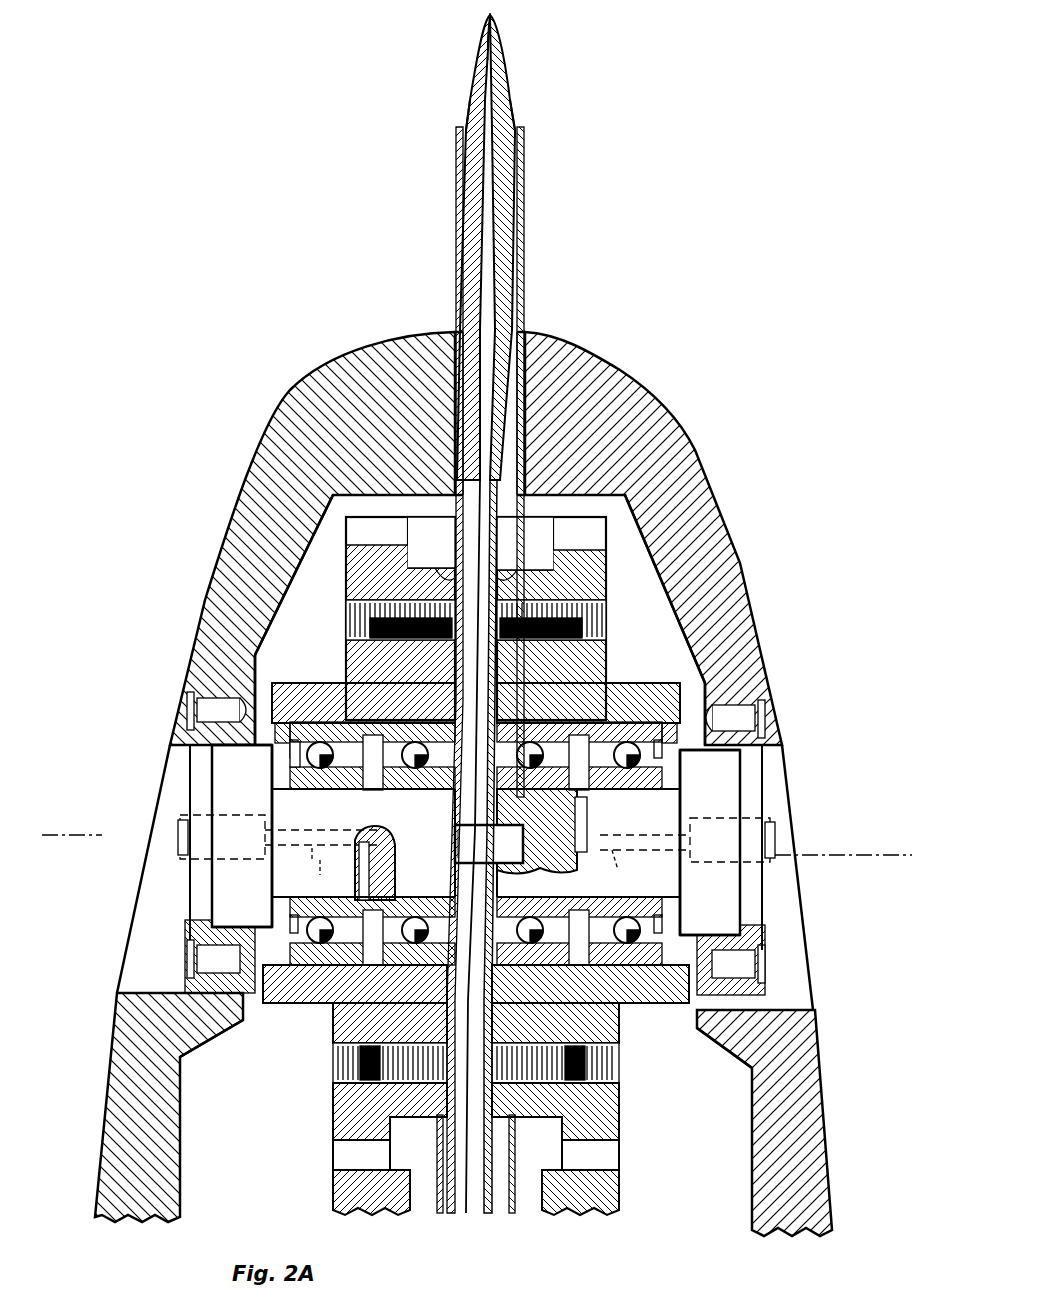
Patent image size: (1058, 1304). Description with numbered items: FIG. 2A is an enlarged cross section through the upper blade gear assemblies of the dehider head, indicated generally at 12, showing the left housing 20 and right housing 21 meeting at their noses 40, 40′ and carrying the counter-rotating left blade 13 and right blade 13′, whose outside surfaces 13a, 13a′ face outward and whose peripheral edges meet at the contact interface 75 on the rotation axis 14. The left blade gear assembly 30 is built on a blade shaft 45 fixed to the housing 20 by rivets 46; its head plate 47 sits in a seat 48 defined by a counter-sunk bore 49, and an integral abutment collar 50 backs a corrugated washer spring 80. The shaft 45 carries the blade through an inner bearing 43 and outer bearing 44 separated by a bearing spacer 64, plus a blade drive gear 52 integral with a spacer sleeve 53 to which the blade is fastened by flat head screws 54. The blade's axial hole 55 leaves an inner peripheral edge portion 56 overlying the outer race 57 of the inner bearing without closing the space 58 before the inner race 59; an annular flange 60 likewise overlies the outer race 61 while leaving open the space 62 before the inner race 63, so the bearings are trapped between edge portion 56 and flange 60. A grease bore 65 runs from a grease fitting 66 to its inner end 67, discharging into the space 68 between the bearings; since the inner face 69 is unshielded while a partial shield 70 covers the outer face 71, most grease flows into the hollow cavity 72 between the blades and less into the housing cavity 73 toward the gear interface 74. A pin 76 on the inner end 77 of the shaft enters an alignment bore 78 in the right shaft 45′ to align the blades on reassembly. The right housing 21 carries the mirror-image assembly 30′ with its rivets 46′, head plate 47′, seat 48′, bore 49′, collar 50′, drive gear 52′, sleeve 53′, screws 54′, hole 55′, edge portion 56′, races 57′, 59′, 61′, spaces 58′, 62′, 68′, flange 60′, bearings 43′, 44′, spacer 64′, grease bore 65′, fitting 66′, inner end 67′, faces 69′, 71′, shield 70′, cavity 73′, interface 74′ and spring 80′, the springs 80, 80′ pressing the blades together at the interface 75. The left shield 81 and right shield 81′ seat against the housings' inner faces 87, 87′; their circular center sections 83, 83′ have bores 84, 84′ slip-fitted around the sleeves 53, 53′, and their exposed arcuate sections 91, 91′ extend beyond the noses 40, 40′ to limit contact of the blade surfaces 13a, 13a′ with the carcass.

The surgical instrument 12 is at (812, 214).
The left blade 13 is at (483, 78).
The right blade 13′ is at (525, 80).
The blade outside surface 13a is at (468, 100).
The blade outside surface 13a′ is at (512, 104).
The blade rotation axis 14 is at (50, 822).
The left housing 20 is at (282, 385).
The right housing 21 is at (683, 392).
The blade gear assembly 30 is at (322, 567).
The blade gear assembly 30′ is at (640, 632).
The nose 40 is at (403, 362).
The nose 40′ is at (585, 372).
The inner bearing 43 is at (432, 718).
The rotor end member 43′ is at (528, 718).
The outer bearing 44 is at (322, 718).
The outer bearing 44′ is at (632, 718).
The blade shaft 45 is at (290, 866).
The blade shaft 45′ is at (660, 830).
The rivets 46 is at (215, 711).
The fastening screw 46′ is at (760, 962).
The head plate 47 is at (196, 790).
The housing wall 47′ is at (766, 900).
The seat 48 is at (185, 656).
The housing shoulder 48′ is at (700, 1035).
The bore 49 is at (125, 935).
The lower housing portion 49′ is at (818, 965).
The abutment collar 50 is at (225, 760).
The support collar 50′ is at (745, 760).
The blade drive gear 52 is at (345, 1115).
The lower rotor member 52′ is at (590, 1110).
The spacer sleeve 53 is at (298, 1008).
The spacer sleeve 53′ is at (660, 1018).
The flat head screws 54 is at (380, 1060).
The commutator brushes 54′ is at (580, 1068).
The axial hole 55 is at (452, 800).
The rotor sleeve 55′ is at (468, 870).
The inner peripheral edge portion 56 is at (415, 987).
The bearing block 56′ is at (534, 987).
The outer race 57 is at (408, 718).
The rotor core 57′ is at (566, 718).
The space 58 is at (393, 715).
The upper rotor member 58′ is at (560, 683).
The inner race 59 is at (363, 843).
The rotor body 59′ is at (588, 843).
The annular flange 60 is at (292, 738).
The bearing key 60′ is at (665, 750).
The outer race 61 is at (306, 715).
The bearing retainer 61′ is at (662, 738).
The space 62 is at (318, 790).
The upper ball bearing 62′ is at (628, 790).
The inner race 63 is at (348, 790).
The bearing spacer 64 is at (360, 720).
The bearing race 64′ is at (612, 720).
The grease bore 65 is at (323, 870).
The pin 65′ is at (637, 868).
The grease fitting 66 is at (180, 836).
The adjusting screw 66′ is at (772, 838).
The inner end of grease bore 67 is at (398, 865).
The key 67′ is at (606, 824).
The space 68 is at (388, 858).
The cam lug 68′ is at (590, 987).
The inner face of inner bearing 69 is at (355, 987).
The lower bearing support 69′ is at (535, 895).
The partial shield 70 is at (242, 771).
The stator upper part 70′ is at (710, 922).
The outer face of outer bearing 71 is at (272, 900).
The stator lower part 71′ is at (710, 824).
The hollow cavity 72 is at (505, 715).
The left housing cavity 73 is at (178, 1057).
The housing step 73′ is at (700, 672).
The gear interface 74 is at (350, 1160).
The terminal 74′ is at (590, 1160).
The contact interface 75 is at (500, 55).
The pin 76 is at (490, 844).
The inner end of blade shaft 77 is at (439, 861).
The alignment bore 78 is at (530, 850).
The corrugated washer spring 80 is at (278, 803).
The corrugated washer spring 80′ is at (742, 822).
The left shield 81 is at (455, 275).
The right shield 81′ is at (522, 278).
The center plate section 83 is at (455, 545).
The upper recess 83′ is at (502, 545).
The bore 84 is at (440, 576).
The retaining lip 84′ is at (512, 576).
The inner face of housing 87 is at (436, 350).
The inner face of housing 87′ is at (549, 352).
The exposed arcuate shield section 91 is at (456, 168).
The exposed arcuate shield section 91′ is at (525, 172).